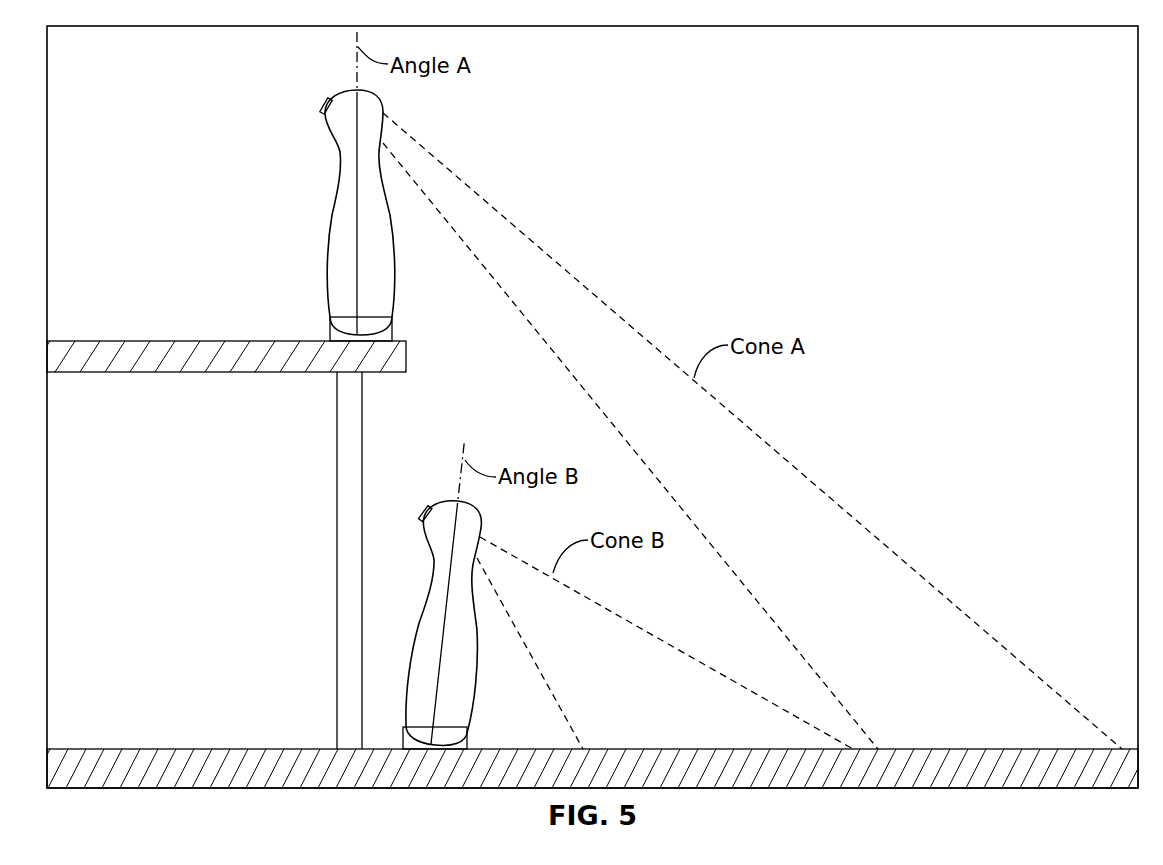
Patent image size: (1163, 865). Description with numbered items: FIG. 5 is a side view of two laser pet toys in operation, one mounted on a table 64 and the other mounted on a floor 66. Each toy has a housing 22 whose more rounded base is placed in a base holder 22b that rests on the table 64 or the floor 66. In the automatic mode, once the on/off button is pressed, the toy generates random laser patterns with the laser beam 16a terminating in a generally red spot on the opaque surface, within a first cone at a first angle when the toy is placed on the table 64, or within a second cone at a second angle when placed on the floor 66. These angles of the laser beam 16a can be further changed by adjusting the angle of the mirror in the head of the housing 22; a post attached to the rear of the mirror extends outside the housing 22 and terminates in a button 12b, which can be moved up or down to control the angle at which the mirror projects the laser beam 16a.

The button 12b is at (322, 108).
The housing 22 is at (332, 250).
The base holder 22b is at (394, 325).
The table 64 is at (85, 341).
The floor 66 is at (128, 749).
The laser beam 16a is at (783, 455).